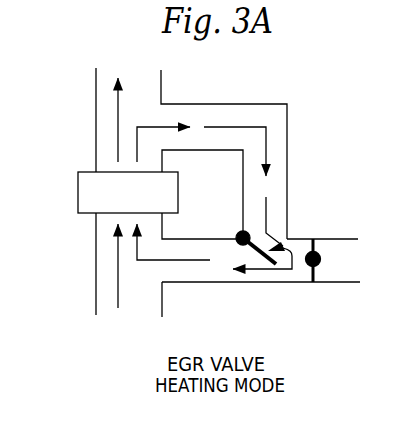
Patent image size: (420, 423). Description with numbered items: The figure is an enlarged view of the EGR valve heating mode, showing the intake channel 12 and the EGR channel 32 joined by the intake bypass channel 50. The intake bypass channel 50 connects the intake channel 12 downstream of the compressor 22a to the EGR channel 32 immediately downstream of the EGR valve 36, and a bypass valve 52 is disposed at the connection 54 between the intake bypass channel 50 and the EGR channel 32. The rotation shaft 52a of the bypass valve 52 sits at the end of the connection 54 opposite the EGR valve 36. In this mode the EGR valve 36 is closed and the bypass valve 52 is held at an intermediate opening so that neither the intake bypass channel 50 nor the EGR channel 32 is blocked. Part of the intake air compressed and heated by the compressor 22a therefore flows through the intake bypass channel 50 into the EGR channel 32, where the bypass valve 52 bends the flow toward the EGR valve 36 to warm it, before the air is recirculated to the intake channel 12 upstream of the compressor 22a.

The intake channel 12 is at (103, 290).
The compressor 22a is at (108, 172).
The intake bypass channel 50 is at (283, 147).
The bypass valve 52 is at (305, 239).
The rotation shaft 52a is at (239, 233).
The connection 54 is at (258, 238).
The EGR valve 36 is at (320, 283).
The EGR channel 32 is at (348, 269).